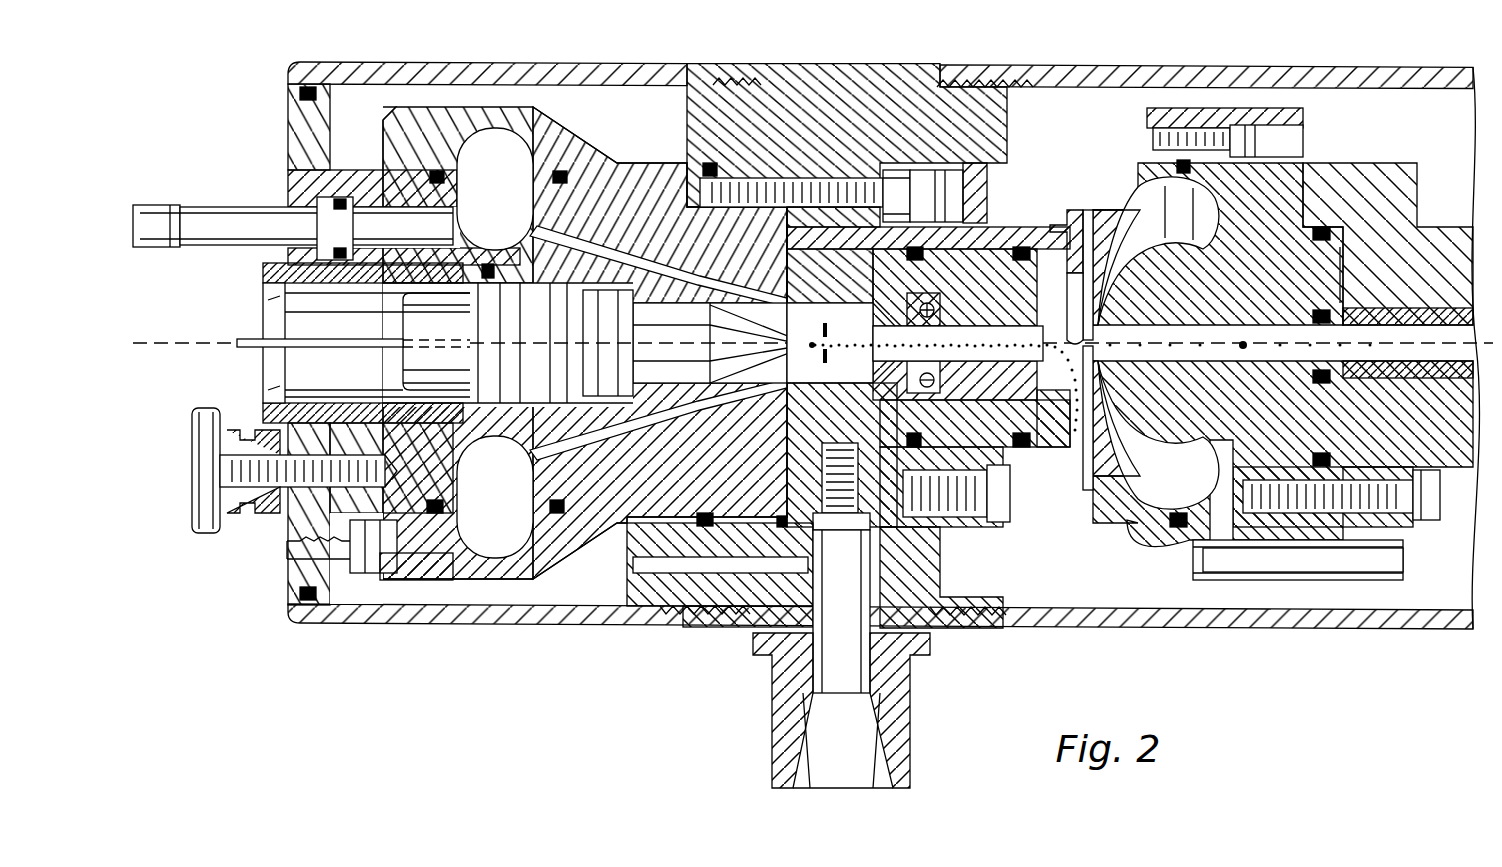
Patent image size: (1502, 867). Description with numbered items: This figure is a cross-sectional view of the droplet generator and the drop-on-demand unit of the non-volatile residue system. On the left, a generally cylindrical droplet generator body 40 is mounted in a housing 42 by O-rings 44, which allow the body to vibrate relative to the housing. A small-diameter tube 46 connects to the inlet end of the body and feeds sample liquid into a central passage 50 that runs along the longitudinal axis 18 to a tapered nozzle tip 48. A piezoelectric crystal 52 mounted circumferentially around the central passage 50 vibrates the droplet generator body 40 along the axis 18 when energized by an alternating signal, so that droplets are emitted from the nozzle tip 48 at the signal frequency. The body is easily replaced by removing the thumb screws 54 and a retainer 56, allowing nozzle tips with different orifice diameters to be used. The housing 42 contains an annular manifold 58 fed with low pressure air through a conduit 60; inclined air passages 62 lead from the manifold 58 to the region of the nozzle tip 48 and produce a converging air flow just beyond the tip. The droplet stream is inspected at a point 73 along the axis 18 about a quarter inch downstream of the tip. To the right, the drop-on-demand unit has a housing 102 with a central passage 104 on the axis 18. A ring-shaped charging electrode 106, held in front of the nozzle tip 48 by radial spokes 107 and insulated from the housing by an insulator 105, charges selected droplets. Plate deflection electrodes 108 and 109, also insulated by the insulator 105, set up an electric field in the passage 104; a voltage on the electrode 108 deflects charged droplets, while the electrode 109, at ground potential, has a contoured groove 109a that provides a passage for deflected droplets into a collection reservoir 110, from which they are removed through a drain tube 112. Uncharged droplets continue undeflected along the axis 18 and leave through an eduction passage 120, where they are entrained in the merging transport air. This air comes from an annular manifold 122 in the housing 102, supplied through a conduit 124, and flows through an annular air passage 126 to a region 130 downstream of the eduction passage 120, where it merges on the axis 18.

The longitudinal axis 18 is at (190, 343).
The droplet generator body 40 is at (657, 313).
The housing 42 is at (650, 525).
The O-rings 44 is at (520, 262).
The tube 46 is at (258, 339).
The nozzle tip 48 is at (753, 300).
The central passage 50 is at (697, 355).
The piezoelectric crystal 52 is at (601, 283).
The thumb screws 54 is at (212, 418).
The retainer 56 is at (266, 279).
The annular manifold 58 is at (480, 198).
The conduit 60 is at (238, 206).
The air passages 62 is at (677, 267).
The point 73 is at (866, 300).
The housing 102 is at (995, 268).
The central passage 104 is at (1040, 248).
The insulator 105 is at (935, 180).
The charging electrode 106 is at (750, 627).
The radial spokes 107 is at (818, 320).
The deflection electrode 108 is at (998, 240).
The deflection electrode 109 is at (1010, 442).
The contoured groove 109a is at (1040, 442).
The collection reservoir 110 is at (1080, 450).
The drain tube 112 is at (1100, 473).
The eduction passage 120 is at (1090, 340).
The annular manifold 122 is at (1180, 222).
The conduit 124 is at (1350, 572).
The annular air passage 126 is at (1105, 335).
The region 130 is at (1225, 340).